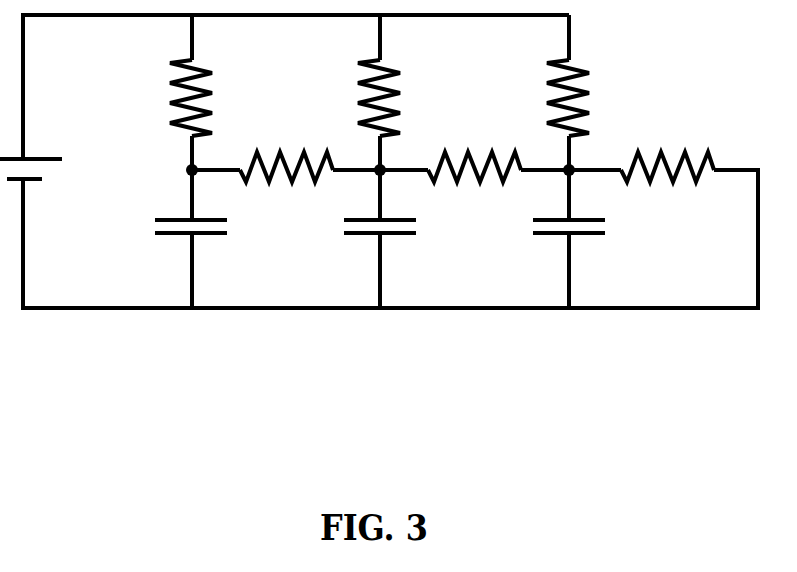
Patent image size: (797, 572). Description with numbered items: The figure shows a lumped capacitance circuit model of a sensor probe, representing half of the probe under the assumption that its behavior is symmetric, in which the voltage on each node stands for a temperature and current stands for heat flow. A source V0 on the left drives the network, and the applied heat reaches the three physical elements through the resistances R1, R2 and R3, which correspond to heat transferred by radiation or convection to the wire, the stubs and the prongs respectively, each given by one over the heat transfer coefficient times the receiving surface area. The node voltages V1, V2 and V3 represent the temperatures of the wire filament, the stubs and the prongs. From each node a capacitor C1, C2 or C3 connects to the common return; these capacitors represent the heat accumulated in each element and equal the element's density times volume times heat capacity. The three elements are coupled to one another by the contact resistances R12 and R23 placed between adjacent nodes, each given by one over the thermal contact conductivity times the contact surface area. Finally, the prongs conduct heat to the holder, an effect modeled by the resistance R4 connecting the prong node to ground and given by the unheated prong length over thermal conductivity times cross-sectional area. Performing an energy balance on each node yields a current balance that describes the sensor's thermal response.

The voltage source / input voltage V0 is at (44, 182).
The wire filament temperature voltage V1 is at (168, 184).
The stub temperature voltage V2 is at (359, 185).
The prong temperature voltage V3 is at (547, 185).
The wire heat transfer resistance R1 is at (212, 98).
The stub heat transfer resistance R2 is at (401, 98).
The prong heat transfer resistance R3 is at (589, 98).
The prong-to-holder conduction resistance R4 is at (667, 146).
The wire-stub contact resistance R12 is at (286, 145).
The stub-prong contact resistance R23 is at (474, 146).
The wire heat capacitance C1 is at (211, 229).
The stub heat capacitance C2 is at (401, 230).
The prong heat capacitance C3 is at (590, 230).